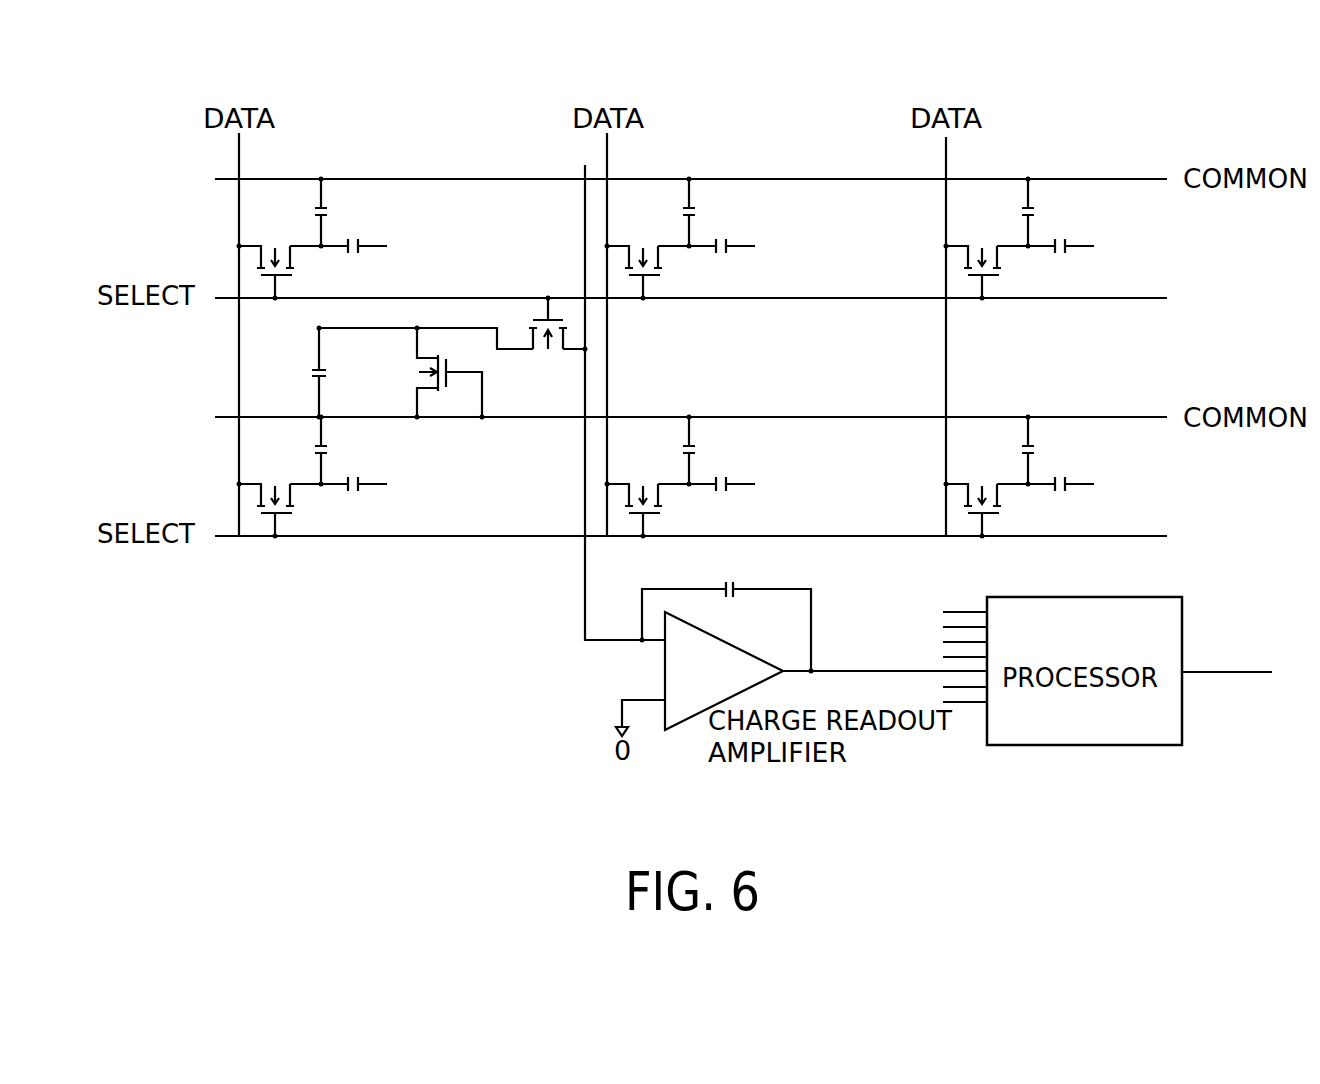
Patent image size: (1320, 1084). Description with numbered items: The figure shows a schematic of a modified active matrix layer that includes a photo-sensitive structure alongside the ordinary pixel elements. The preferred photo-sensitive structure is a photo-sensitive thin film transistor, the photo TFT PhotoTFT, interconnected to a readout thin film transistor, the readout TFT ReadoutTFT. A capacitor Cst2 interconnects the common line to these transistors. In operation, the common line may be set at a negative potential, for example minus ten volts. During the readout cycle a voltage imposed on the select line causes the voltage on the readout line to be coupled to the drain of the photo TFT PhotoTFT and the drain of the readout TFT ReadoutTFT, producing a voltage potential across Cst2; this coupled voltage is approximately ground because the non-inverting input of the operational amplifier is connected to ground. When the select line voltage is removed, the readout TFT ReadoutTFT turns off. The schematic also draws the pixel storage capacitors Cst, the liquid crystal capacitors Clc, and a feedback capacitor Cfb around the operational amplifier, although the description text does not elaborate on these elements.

The storage capacitor Cst is at (652, 331).
The liquid crystal capacitor Clc is at (721, 348).
The capacitor Cst2 is at (292, 372).
The photo TFT PhotoTFT is at (492, 372).
The readout TFT ReadoutTFT is at (620, 323).
The feedback capacitor Cfb is at (726, 612).